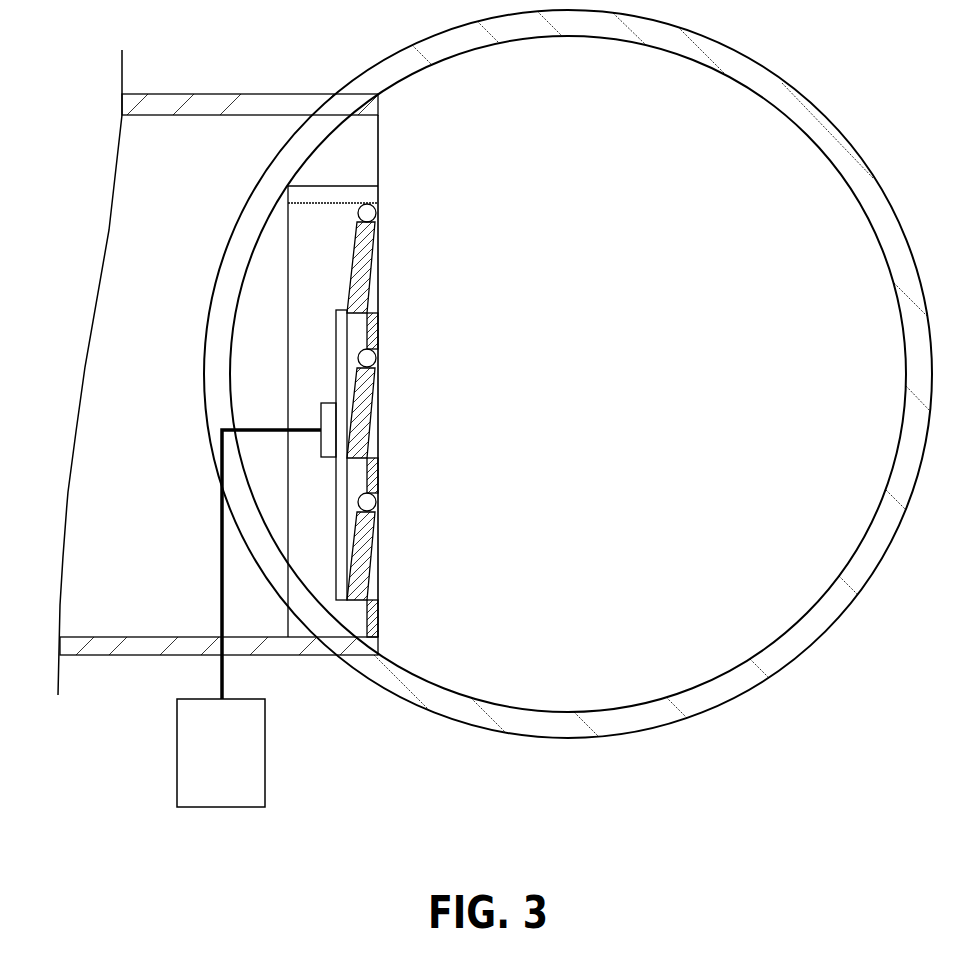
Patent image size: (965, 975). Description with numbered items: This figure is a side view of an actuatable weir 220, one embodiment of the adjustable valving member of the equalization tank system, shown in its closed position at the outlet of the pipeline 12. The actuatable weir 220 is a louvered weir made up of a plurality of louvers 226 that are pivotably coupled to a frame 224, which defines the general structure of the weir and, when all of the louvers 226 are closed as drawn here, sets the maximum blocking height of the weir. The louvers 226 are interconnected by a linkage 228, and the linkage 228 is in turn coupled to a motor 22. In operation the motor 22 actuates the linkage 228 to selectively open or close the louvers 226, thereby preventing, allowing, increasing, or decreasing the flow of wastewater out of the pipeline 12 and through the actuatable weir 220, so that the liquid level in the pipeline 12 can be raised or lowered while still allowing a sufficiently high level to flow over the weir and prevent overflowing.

The pipeline 12 is at (832, 122).
The actuatable weir 220 is at (280, 177).
The motor 22 is at (265, 786).
The frame 224 is at (378, 188).
The louvers 226 is at (373, 267).
The linkage 228 is at (336, 368).